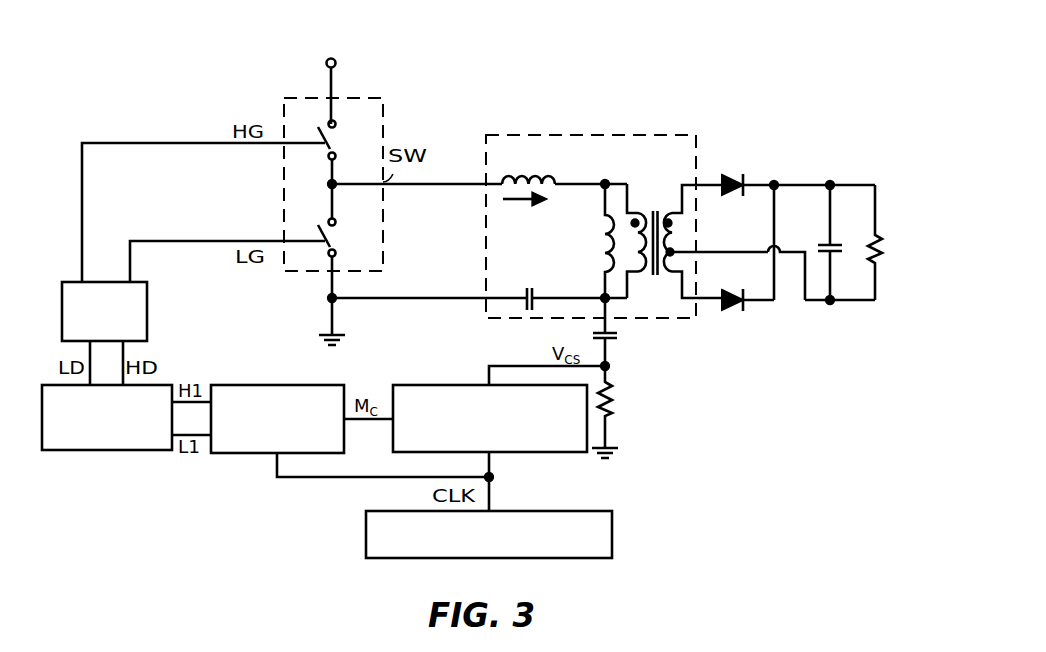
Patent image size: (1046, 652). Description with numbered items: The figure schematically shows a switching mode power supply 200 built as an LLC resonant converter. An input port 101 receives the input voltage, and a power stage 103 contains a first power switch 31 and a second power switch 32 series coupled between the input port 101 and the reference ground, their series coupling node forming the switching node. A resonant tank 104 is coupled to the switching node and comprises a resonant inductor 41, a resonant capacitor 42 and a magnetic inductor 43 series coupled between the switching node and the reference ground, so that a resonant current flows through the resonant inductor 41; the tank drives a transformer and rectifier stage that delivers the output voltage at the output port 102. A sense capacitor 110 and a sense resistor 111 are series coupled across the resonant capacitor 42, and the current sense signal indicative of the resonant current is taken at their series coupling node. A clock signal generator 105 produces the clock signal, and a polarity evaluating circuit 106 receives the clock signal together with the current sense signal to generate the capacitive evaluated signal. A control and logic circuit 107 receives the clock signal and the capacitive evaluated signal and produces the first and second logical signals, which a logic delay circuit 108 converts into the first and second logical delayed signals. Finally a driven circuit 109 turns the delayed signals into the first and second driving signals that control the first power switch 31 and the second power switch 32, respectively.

The switching mode power supply 200 is at (810, 82).
The input port 101 is at (339, 78).
The output port 102 is at (802, 235).
The power stage 103 is at (356, 184).
The first power switch 31 is at (336, 141).
The second power switch 32 is at (336, 238).
The resonant tank 104 is at (605, 134).
The resonant inductor 41 is at (541, 177).
The resonant capacitor 42 is at (543, 293).
The magnetic inductor 43 is at (601, 250).
The clock signal generator 105 is at (365, 536).
The polarity evaluating circuit 106 is at (438, 383).
The control and logic circuit 107 is at (251, 459).
The logic delay circuit 108 is at (94, 456).
The driven circuit 109 is at (152, 308).
The sense capacitor 110 is at (619, 346).
The sense resistor 111 is at (612, 395).